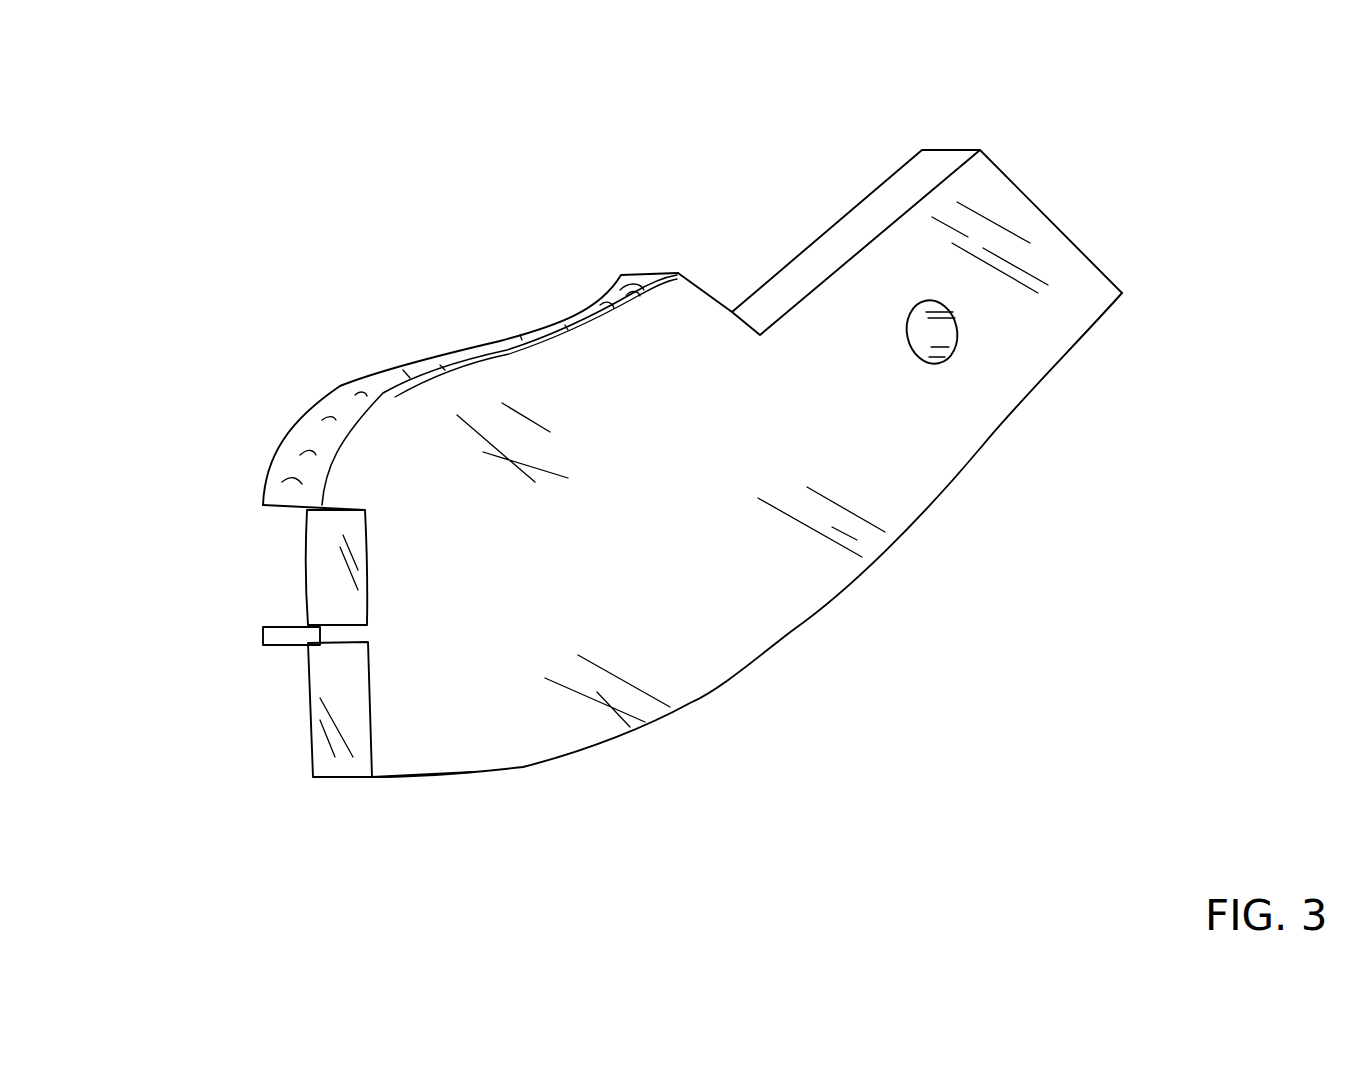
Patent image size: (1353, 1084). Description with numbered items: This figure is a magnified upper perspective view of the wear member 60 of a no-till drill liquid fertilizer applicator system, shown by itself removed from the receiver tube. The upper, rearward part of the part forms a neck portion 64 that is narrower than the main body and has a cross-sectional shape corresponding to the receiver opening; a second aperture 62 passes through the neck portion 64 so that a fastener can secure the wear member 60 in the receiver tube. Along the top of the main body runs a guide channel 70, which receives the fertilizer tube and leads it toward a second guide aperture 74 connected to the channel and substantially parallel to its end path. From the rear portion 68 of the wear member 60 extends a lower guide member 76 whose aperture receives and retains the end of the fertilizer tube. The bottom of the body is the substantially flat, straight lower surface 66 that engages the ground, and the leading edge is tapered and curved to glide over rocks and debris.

The wear member 60 is at (768, 597).
The second aperture 62 is at (943, 332).
The neck portion 64 is at (855, 230).
The lower surface 66 is at (475, 773).
The rear portion 68 is at (345, 763).
The guide channel 70 is at (340, 400).
The second guide aperture 74 is at (307, 512).
The lower guide member 76 is at (280, 635).